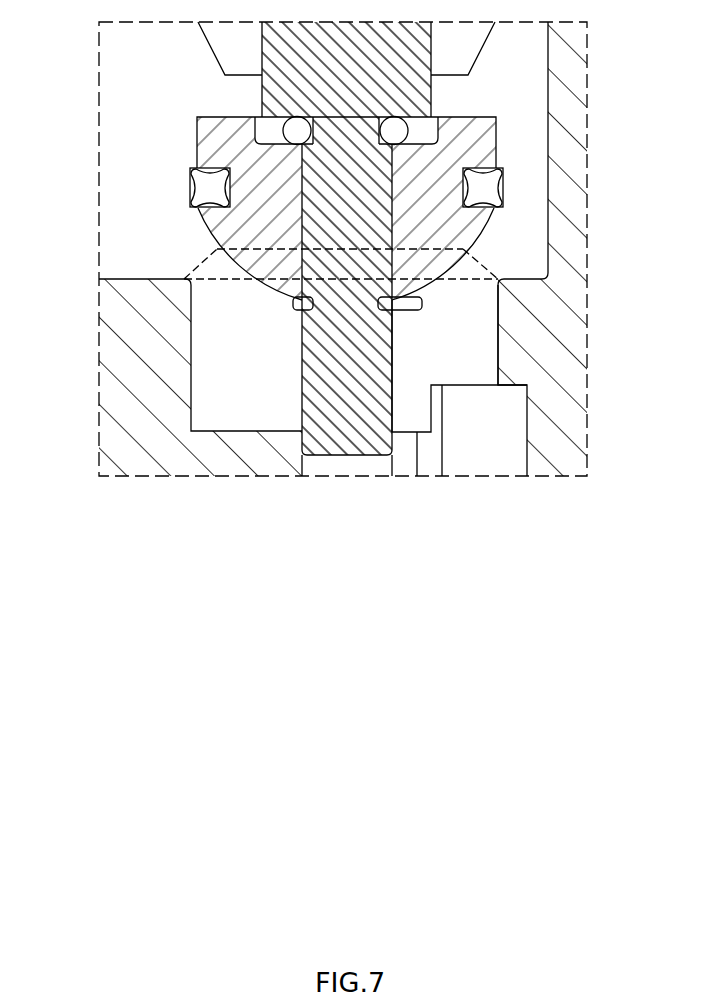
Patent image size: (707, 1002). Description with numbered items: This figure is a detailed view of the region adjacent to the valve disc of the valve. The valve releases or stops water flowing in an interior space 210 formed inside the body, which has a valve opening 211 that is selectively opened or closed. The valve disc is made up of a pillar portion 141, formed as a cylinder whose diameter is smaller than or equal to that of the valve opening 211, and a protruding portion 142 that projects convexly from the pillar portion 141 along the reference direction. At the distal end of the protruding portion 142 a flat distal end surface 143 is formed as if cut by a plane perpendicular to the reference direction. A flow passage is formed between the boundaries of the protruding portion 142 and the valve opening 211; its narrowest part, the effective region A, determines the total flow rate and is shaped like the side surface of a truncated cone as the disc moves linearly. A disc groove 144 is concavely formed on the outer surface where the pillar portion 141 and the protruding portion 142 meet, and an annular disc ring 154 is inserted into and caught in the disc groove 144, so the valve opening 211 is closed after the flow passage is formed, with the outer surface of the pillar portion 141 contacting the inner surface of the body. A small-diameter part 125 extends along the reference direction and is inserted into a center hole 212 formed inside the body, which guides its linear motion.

The effective region A is at (205, 262).
The small-diameter part 125 is at (372, 450).
The pillar portion 141 is at (487, 133).
The protruding portion 142 is at (465, 228).
The distal end surface 143 is at (293, 301).
The disc groove 144 is at (495, 160).
The disc ring 154 is at (488, 188).
The interior space 210 is at (565, 382).
The valve opening 211 is at (453, 298).
The center hole 212 is at (327, 463).